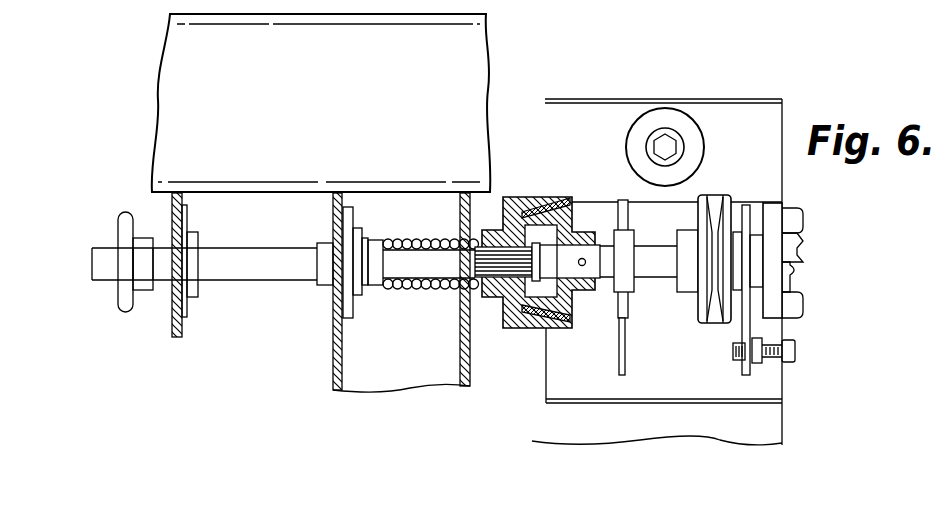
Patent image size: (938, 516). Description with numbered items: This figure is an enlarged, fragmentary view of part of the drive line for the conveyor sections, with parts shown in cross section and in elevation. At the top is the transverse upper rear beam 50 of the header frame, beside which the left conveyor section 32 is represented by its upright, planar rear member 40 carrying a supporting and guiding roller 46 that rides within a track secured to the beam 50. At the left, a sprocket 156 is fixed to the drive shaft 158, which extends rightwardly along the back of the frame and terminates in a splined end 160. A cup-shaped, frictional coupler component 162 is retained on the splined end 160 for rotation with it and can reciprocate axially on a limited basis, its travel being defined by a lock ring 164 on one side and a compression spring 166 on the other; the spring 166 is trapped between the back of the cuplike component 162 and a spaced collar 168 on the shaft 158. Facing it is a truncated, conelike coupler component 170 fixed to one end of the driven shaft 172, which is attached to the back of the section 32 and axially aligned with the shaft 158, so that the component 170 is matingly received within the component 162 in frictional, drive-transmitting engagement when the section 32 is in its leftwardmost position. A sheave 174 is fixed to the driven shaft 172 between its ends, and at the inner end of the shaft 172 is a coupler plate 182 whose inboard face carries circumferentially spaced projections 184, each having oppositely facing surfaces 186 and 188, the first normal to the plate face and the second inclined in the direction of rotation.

The conveyor section 32 is at (753, 99).
The rear member 40 is at (778, 415).
The rollers 46 is at (690, 135).
The upper rear beam 50 is at (478, 40).
The sprocket 156 is at (125, 290).
The drive shaft 158 is at (252, 270).
The splined end 160 is at (510, 268).
The coupler component 162 is at (522, 203).
The lock ring 164 is at (565, 292).
The compression spring 166 is at (420, 213).
The collar 168 is at (375, 290).
The coupler component 170 is at (586, 208).
The driven shaft 172 is at (658, 272).
The sheave 174 is at (700, 320).
The coupler plate 182 is at (782, 206).
The projections 184 is at (805, 221).
The surface 186 is at (793, 269).
The surface 188 is at (803, 247).